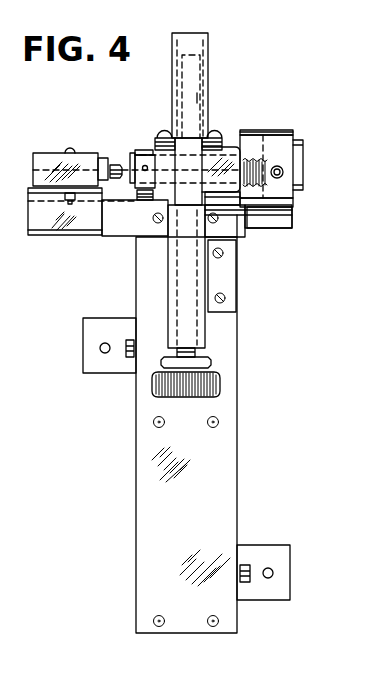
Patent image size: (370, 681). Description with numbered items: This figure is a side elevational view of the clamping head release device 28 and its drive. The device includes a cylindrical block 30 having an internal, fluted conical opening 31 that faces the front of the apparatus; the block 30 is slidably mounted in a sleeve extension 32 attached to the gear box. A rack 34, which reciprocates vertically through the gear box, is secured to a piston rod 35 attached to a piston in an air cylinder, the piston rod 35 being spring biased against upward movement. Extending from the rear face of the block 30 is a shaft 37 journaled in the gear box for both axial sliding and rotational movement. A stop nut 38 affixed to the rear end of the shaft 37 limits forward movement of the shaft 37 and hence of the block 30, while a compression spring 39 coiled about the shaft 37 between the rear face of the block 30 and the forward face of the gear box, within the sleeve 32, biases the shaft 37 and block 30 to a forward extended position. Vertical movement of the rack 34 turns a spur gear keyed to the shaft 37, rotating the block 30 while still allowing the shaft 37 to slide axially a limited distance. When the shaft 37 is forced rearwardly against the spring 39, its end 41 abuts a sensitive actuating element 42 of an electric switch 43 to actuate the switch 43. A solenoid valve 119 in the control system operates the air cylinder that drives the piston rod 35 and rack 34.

The clamping head release device 28 is at (280, 107).
The cylindrical block 30 is at (300, 140).
The fluted conical opening 31 is at (288, 160).
The sleeve extension 32 is at (287, 130).
The rack 34 is at (193, 98).
The piston rod 35 is at (202, 350).
The shaft 37 is at (152, 153).
The stop nut 38 is at (123, 148).
The compression spring 39 is at (257, 213).
The end of shaft 41 is at (122, 162).
The actuating element 42 is at (108, 157).
The electric switch 43 is at (42, 157).
The solenoid valve 119 is at (45, 229).